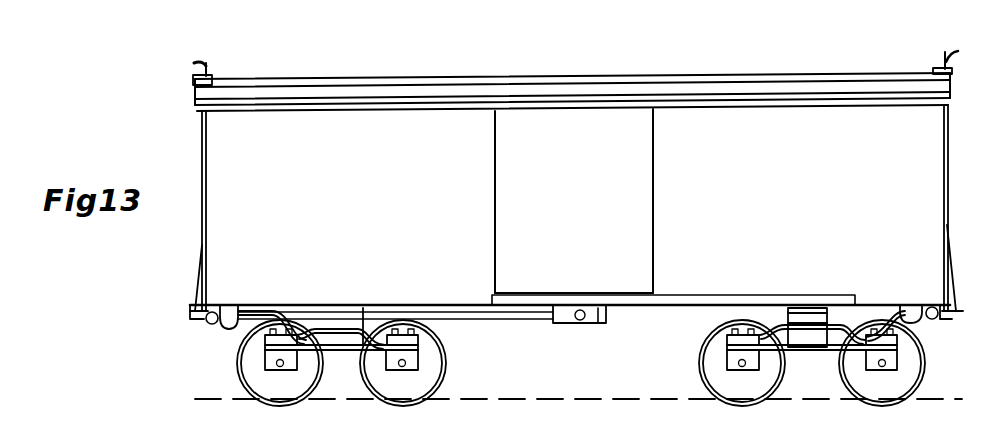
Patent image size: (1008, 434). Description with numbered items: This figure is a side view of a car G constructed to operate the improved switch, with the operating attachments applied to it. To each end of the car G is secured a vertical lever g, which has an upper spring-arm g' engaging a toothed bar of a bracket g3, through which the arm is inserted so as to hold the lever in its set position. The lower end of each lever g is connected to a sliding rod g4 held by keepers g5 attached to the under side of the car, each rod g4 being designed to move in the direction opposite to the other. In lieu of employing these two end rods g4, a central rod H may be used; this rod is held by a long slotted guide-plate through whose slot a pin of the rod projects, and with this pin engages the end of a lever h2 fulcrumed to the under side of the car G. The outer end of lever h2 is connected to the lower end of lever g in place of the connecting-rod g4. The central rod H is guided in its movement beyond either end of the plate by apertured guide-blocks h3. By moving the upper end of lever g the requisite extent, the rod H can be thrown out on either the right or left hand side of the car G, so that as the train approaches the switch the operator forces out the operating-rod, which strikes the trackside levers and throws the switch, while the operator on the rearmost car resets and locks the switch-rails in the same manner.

The car G is at (570, 189).
The vertical lever g is at (564, 208).
The spring-arm g' is at (569, 76).
The bracket g3 is at (212, 77).
The sliding rod g4 is at (205, 327).
The keepers g5 is at (226, 330).
The lever h2 is at (497, 320).
The central rod H is at (580, 322).
The apertured guide-block h3 is at (599, 318).